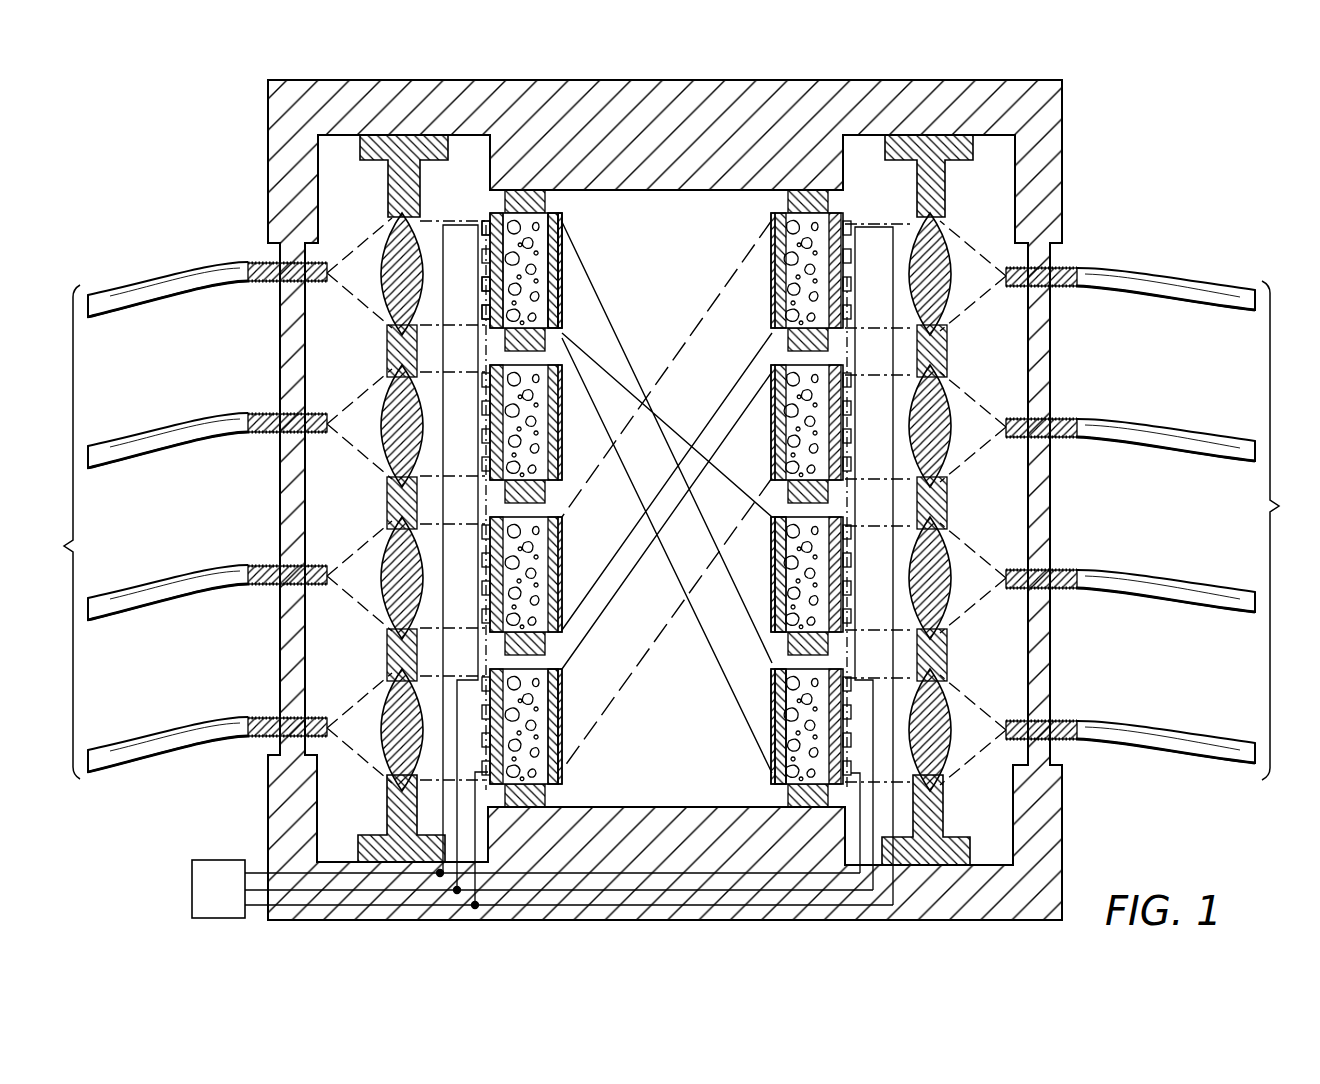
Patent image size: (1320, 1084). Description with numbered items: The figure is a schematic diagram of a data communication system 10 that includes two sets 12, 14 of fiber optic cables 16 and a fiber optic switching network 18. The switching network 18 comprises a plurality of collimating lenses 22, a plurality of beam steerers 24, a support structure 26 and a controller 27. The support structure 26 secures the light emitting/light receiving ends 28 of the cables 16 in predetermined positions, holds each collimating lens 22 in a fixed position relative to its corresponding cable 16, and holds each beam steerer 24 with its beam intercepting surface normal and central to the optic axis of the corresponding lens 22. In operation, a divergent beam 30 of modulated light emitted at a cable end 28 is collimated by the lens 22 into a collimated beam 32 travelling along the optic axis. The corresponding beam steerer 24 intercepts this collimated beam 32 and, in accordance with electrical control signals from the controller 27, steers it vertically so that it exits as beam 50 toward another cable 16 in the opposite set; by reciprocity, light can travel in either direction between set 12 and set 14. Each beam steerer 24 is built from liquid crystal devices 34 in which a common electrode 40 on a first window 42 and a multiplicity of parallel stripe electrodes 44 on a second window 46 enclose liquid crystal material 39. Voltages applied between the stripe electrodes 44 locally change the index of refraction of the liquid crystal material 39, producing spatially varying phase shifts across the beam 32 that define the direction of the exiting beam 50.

The data communication system 10 is at (703, 500).
The set of fiber optic cables 12 is at (56, 532).
The set of fiber optic cables 14 is at (1284, 530).
The fiber optic cable 16 is at (1146, 706).
The fiber optic switching network 18 is at (343, 192).
The collimating lens 22 is at (400, 236).
The beam steerer 24 is at (568, 318).
The support structure 26 is at (305, 112).
The controller 27 is at (222, 860).
The light emitting/light receiving end 28 is at (332, 266).
The divergent beam 30 is at (373, 284).
The collimated beam 32 is at (474, 284).
The liquid crystal device 34 is at (538, 262).
The liquid crystal material 39 is at (555, 242).
The common electrode 40 is at (556, 262).
The first window 42 is at (560, 286).
The stripe electrode 44 is at (490, 222).
The second window 46 is at (486, 330).
The exiting collimated beam 50 is at (603, 360).